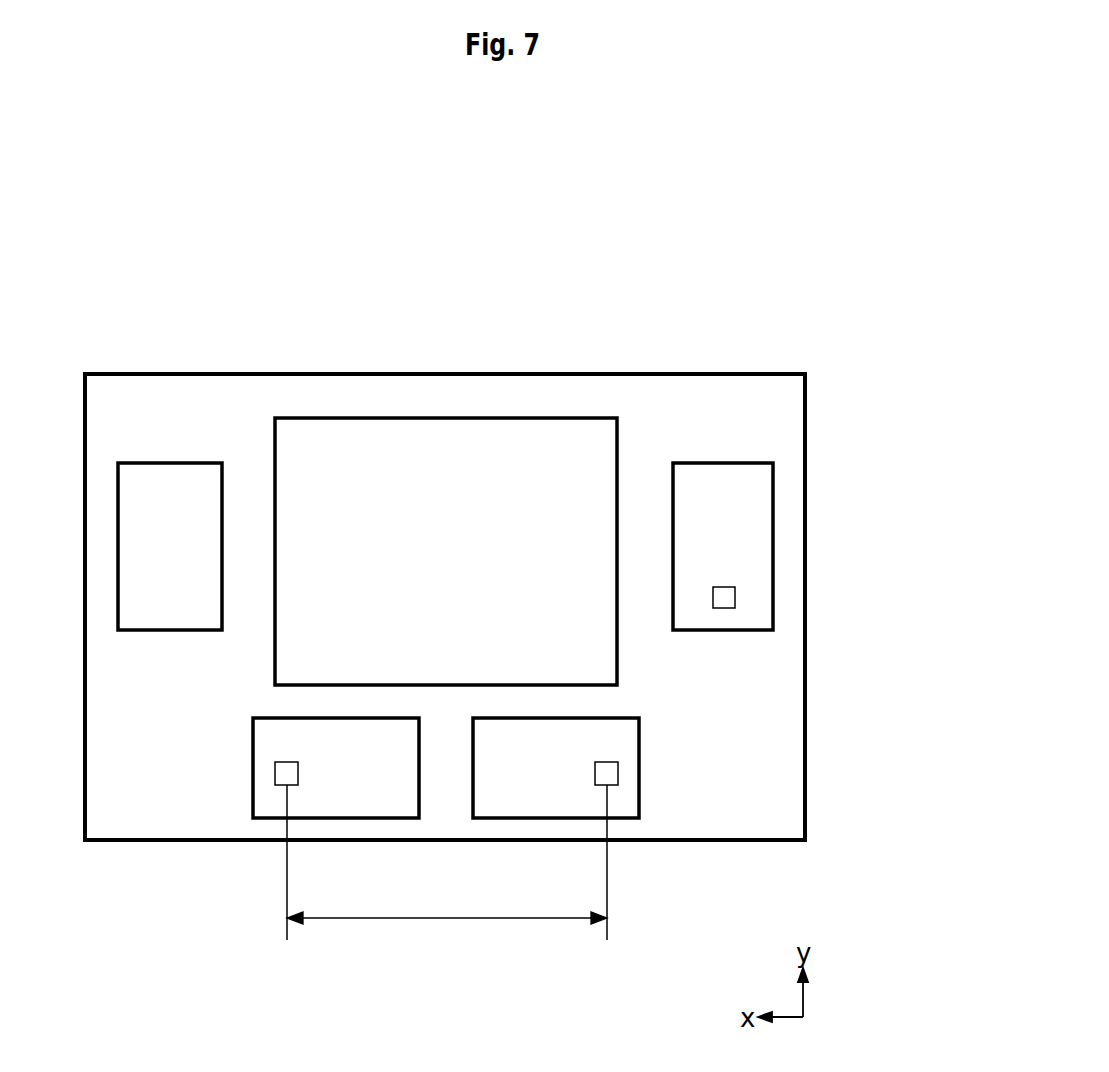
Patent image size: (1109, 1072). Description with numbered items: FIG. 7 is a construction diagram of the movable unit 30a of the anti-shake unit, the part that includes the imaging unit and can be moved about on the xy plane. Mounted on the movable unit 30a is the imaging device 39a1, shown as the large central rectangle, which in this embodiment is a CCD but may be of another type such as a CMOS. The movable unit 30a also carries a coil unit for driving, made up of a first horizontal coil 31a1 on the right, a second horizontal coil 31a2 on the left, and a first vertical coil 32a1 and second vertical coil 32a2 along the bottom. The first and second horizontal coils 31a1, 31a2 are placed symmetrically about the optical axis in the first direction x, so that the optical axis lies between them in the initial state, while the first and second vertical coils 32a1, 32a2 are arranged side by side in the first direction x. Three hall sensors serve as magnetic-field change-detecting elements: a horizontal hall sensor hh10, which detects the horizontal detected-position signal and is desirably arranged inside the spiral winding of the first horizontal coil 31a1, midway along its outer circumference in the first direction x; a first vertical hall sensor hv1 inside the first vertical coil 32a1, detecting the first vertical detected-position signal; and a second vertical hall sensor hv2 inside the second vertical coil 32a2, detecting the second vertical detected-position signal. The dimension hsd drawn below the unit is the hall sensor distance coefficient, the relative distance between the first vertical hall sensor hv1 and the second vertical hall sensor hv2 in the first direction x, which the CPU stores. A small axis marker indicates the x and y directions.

The movable unit 30a is at (805, 374).
The imaging device 39a1 is at (683, 432).
The second horizontal coil 31a2 is at (163, 463).
The first horizontal coil 31a1 is at (773, 463).
The horizontal hall sensor hh10 is at (730, 587).
The second vertical coil 32a2 is at (253, 718).
The second vertical hall sensor hv2 is at (275, 762).
The first vertical coil 32a1 is at (639, 718).
The first vertical hall sensor hv1 is at (618, 774).
The hall sensor distance coefficient hsd is at (447, 862).